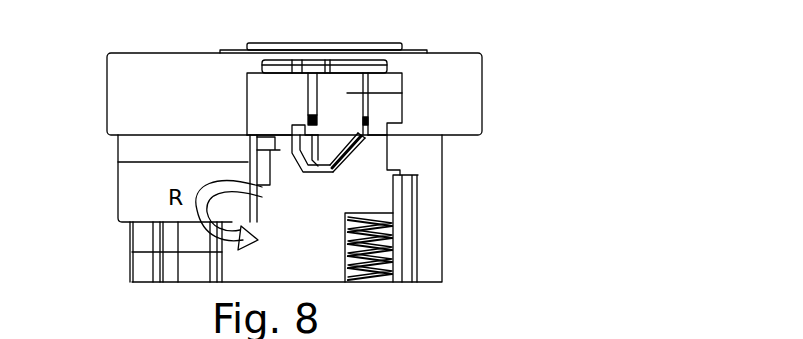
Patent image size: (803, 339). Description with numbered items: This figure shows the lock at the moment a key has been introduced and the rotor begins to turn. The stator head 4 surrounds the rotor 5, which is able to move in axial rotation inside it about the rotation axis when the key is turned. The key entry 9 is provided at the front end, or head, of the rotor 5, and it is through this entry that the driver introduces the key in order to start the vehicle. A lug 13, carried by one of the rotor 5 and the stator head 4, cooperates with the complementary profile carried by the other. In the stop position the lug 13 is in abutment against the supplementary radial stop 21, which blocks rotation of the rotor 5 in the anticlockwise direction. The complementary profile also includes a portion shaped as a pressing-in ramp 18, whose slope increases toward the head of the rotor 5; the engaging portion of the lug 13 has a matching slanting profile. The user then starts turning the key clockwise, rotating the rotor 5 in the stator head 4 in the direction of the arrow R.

The stator head 4 is at (107, 97).
The rotor 5 is at (258, 108).
The key entry 9 is at (323, 62).
The lug 13 is at (338, 145).
The pressing-in ramp 18 is at (365, 145).
The supplementary radial stop 21 is at (293, 143).